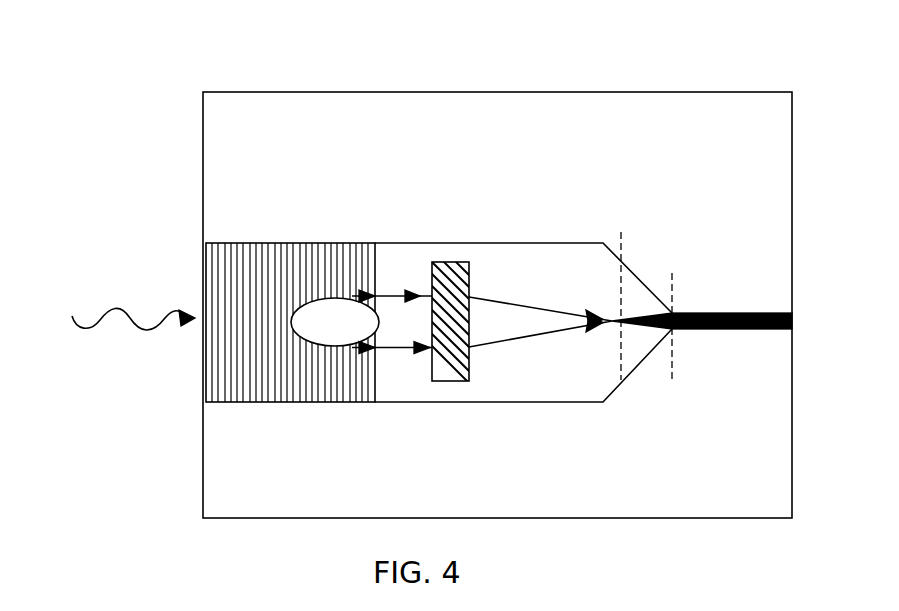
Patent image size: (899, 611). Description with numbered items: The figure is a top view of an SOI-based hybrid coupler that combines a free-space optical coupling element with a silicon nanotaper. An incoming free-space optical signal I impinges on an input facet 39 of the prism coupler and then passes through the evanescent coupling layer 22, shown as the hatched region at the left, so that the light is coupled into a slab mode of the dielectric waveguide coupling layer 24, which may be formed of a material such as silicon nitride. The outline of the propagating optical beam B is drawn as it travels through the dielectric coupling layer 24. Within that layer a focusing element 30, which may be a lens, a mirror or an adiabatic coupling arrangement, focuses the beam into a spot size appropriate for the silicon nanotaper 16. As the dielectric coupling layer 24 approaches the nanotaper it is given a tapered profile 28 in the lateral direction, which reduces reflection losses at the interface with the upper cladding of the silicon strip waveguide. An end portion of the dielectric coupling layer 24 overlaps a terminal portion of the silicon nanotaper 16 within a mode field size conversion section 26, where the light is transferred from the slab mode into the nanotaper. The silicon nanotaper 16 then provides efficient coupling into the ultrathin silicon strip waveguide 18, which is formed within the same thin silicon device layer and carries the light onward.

The input facet 39 is at (203, 263).
The evanescent coupling layer 22 is at (282, 261).
The focusing element 30 is at (455, 262).
The dielectric waveguide coupling layer 24 is at (528, 372).
The tapered profile 28 is at (621, 380).
The mode field size conversion section 26 is at (638, 347).
The silicon nanotaper 16 is at (640, 318).
The ultrathin silicon strip waveguide 18 is at (745, 307).
The propagating optical beam B is at (353, 322).
The incoming free-space optical signal I is at (114, 311).